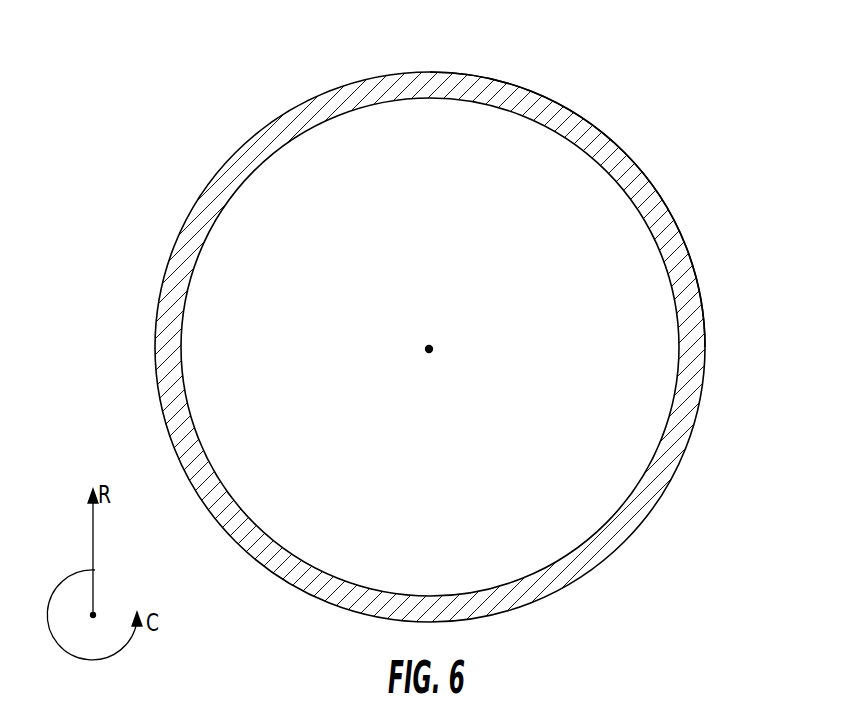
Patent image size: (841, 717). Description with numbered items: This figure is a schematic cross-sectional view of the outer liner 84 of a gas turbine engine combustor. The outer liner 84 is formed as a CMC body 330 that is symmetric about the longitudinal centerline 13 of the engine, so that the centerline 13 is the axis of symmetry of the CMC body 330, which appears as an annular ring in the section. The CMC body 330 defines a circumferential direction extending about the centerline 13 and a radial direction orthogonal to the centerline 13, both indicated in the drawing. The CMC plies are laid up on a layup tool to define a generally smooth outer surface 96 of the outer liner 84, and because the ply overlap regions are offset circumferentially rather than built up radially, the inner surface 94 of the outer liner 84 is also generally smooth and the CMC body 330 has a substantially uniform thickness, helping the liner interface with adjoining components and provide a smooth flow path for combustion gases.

The outer liner 84 is at (205, 139).
The inner surface 94 is at (557, 138).
The outer surface 96 is at (630, 157).
The longitudinal centerline 13 is at (432, 345).
The CMC body 330 is at (686, 413).